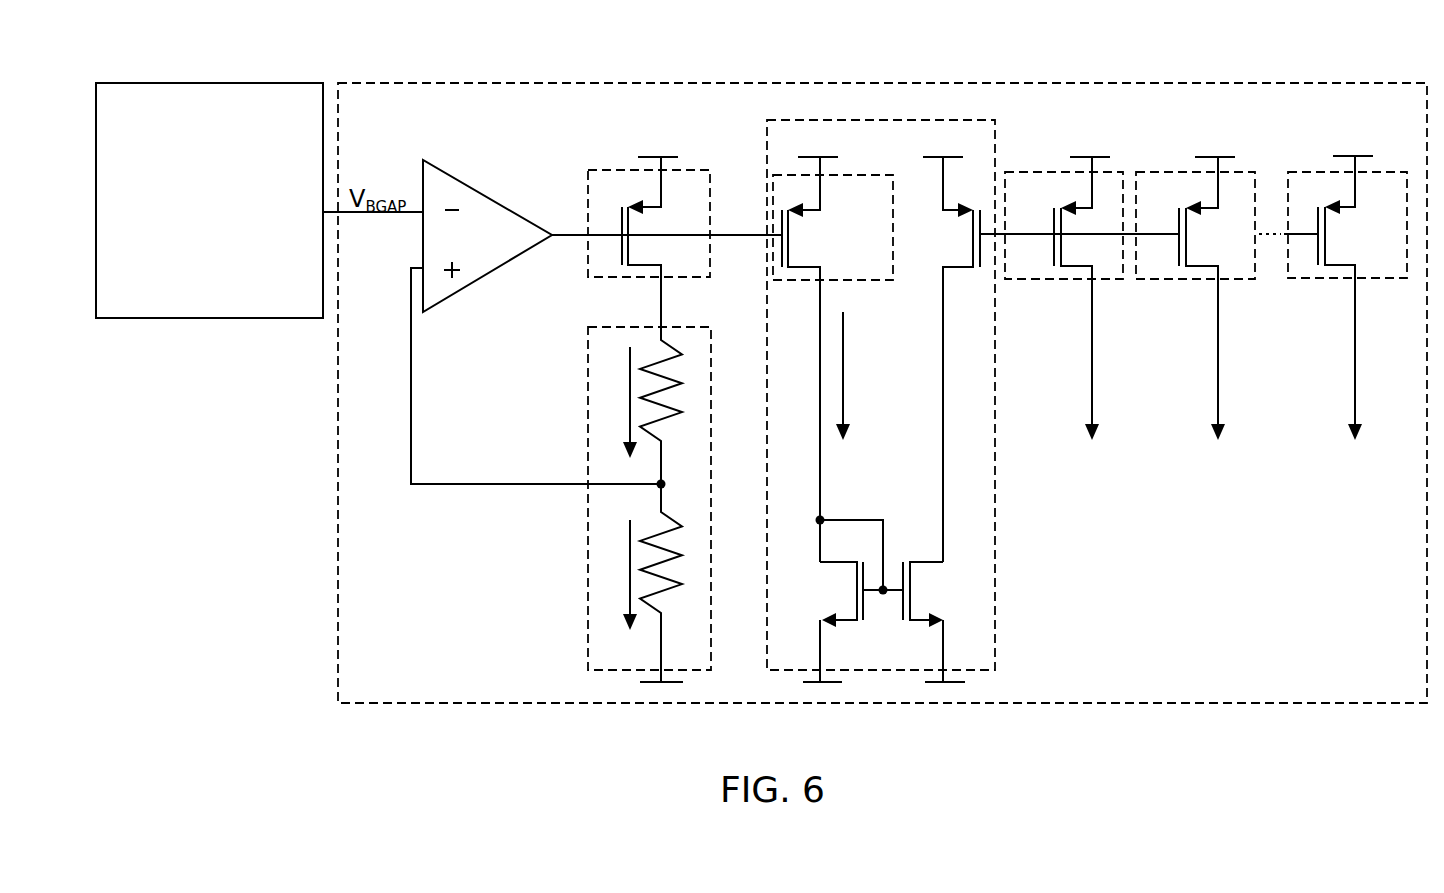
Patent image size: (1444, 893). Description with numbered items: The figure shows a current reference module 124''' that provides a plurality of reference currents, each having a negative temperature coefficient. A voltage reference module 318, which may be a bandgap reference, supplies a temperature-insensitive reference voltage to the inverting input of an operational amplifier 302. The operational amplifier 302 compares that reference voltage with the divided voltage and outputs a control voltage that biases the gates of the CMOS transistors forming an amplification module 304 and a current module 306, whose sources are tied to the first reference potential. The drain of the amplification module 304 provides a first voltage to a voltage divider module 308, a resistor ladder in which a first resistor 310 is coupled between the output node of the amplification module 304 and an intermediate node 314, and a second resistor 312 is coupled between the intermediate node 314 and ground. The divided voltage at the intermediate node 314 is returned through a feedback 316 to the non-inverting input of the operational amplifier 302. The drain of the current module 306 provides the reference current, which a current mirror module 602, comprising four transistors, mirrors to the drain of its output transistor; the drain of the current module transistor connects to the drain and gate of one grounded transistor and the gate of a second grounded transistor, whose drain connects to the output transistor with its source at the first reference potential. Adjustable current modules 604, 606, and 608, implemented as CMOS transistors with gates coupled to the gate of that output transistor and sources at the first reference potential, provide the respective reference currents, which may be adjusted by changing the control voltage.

The voltage reference module 318 is at (267, 83).
The current reference module 124''' is at (885, 376).
The operational amplifier 302 is at (483, 195).
The amplification module 304 is at (700, 170).
The current module 306 is at (833, 175).
The voltage divider module 308 is at (638, 507).
The first resistor 310 is at (672, 405).
The second resistor 312 is at (672, 575).
The intermediate node 314 is at (658, 487).
The feedback 316 is at (427, 484).
The current mirror module 602 is at (978, 120).
The adjustable current module 604 is at (1063, 279).
The adjustable current module 606 is at (1195, 279).
The adjustable current module 608 is at (1349, 278).